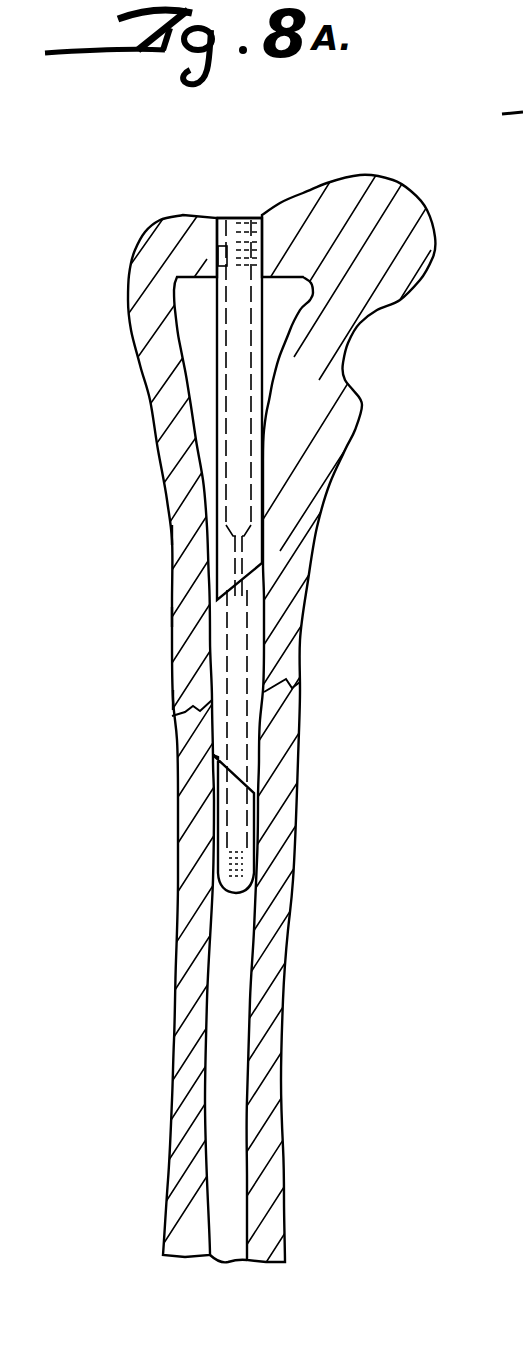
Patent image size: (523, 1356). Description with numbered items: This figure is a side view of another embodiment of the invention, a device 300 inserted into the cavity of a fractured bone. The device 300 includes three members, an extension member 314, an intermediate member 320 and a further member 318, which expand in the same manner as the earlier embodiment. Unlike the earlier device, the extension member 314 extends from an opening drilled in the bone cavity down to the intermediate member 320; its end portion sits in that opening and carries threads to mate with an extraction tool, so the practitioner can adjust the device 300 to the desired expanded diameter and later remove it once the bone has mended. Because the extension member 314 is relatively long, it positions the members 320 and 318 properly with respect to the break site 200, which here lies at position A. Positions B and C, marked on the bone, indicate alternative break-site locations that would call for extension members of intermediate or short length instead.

The device 300 is at (223, 203).
The extension member 314 is at (265, 451).
The member 318 is at (250, 830).
The intermediate member 320 is at (267, 624).
The break site 200 is at (300, 682).
The position A is at (164, 700).
The position B is at (164, 617).
The position C is at (164, 535).